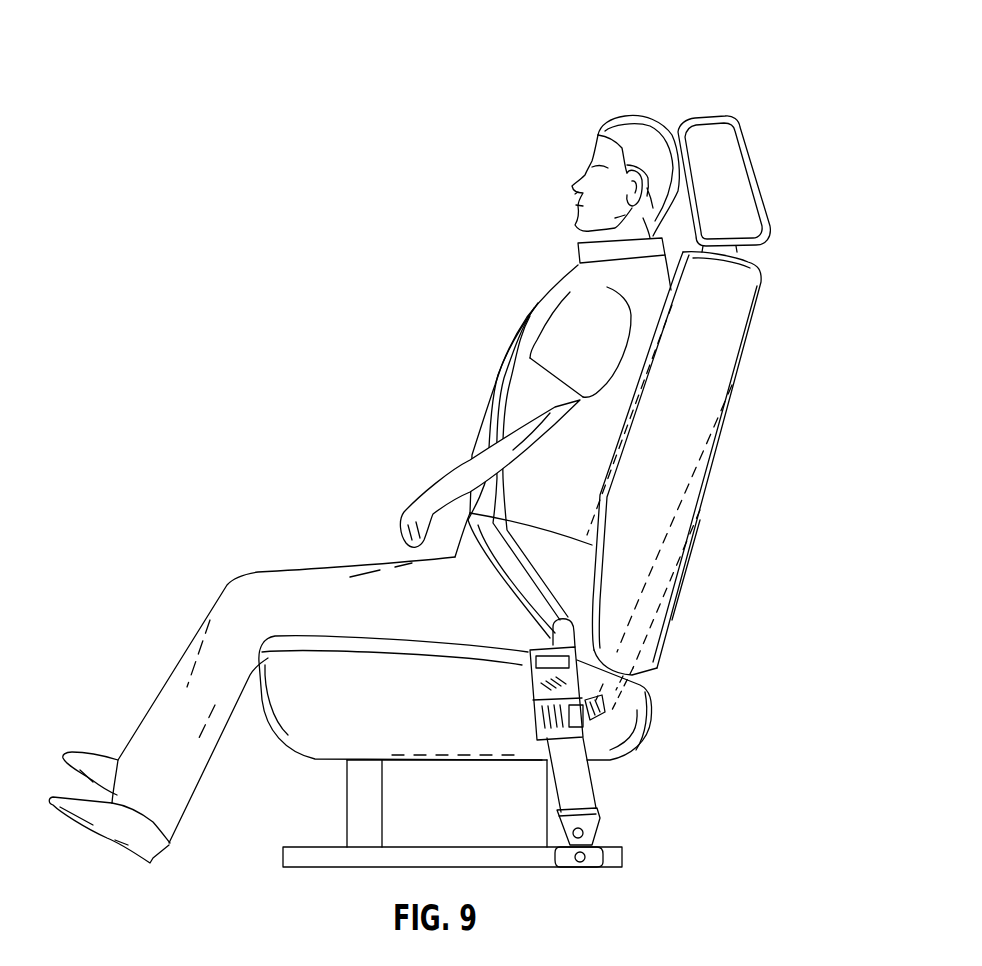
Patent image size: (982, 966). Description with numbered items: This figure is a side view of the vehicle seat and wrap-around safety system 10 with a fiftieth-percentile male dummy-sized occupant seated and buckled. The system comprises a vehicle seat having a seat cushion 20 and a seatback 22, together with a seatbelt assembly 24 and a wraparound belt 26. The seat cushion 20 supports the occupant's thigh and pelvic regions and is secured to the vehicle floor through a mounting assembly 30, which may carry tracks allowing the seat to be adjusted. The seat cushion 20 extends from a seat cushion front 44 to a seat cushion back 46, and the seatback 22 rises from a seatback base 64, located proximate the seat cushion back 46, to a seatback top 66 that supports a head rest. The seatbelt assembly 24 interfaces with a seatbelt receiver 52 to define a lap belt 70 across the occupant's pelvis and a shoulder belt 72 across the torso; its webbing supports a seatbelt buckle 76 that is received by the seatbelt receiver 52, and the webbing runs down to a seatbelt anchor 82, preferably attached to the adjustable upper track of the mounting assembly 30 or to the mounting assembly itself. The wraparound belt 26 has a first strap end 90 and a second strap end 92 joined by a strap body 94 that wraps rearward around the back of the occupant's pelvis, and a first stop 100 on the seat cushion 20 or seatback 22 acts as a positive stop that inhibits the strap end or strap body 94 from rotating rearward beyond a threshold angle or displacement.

The vehicle seat and wrap-around safety system 10 is at (385, 66).
The seat cushion 20 is at (272, 765).
The seatback 22 is at (786, 312).
The seatbelt assembly 24 is at (458, 443).
The wraparound belt 26 is at (728, 495).
The mounting assembly 30 is at (289, 820).
The seat cushion front 44 is at (255, 695).
The seat cushion back 46 is at (655, 732).
The seatbelt receiver 52 is at (532, 693).
The seatback base 64 is at (596, 632).
The seatback top 66 is at (770, 243).
The lap belt 70 is at (494, 583).
The shoulder belt 72 is at (497, 400).
The seatbelt buckle 76 is at (518, 655).
The seatbelt anchor 82 is at (598, 818).
The first strap end 90 is at (635, 688).
The second strap end 92 is at (619, 683).
The strap body 94 is at (661, 592).
The first stop 100 is at (545, 760).